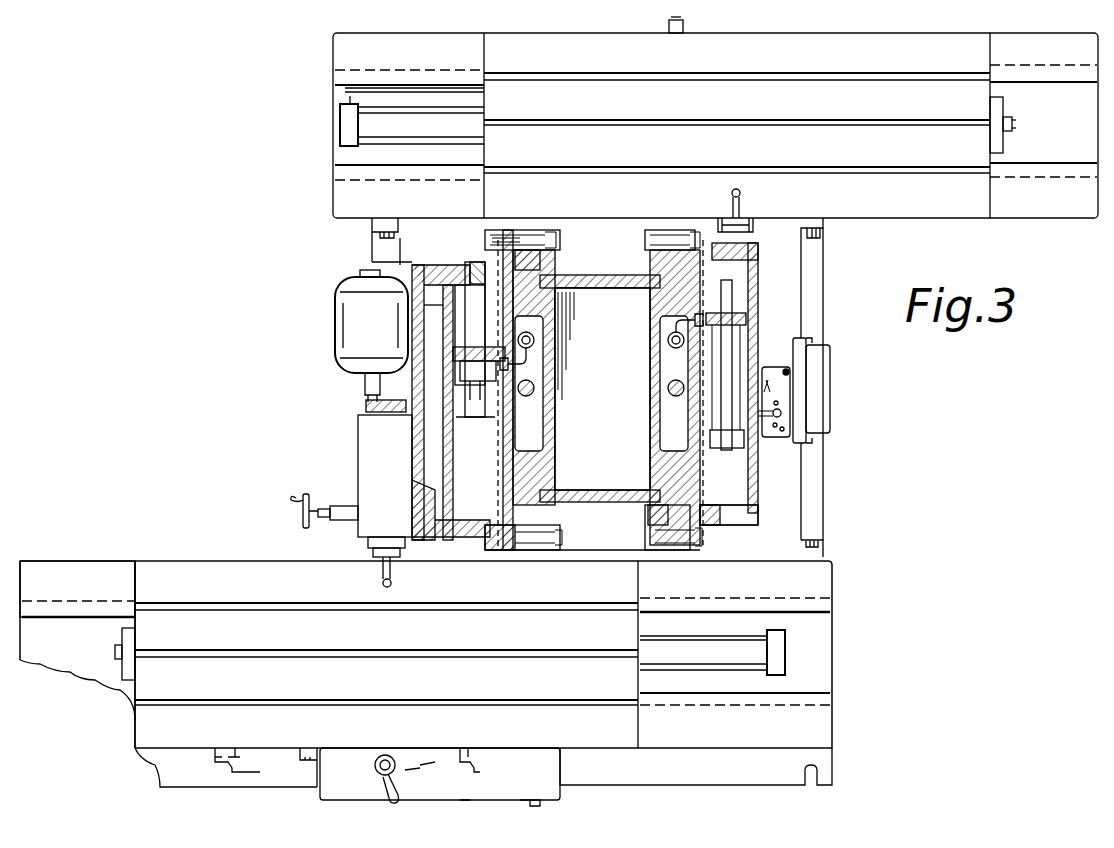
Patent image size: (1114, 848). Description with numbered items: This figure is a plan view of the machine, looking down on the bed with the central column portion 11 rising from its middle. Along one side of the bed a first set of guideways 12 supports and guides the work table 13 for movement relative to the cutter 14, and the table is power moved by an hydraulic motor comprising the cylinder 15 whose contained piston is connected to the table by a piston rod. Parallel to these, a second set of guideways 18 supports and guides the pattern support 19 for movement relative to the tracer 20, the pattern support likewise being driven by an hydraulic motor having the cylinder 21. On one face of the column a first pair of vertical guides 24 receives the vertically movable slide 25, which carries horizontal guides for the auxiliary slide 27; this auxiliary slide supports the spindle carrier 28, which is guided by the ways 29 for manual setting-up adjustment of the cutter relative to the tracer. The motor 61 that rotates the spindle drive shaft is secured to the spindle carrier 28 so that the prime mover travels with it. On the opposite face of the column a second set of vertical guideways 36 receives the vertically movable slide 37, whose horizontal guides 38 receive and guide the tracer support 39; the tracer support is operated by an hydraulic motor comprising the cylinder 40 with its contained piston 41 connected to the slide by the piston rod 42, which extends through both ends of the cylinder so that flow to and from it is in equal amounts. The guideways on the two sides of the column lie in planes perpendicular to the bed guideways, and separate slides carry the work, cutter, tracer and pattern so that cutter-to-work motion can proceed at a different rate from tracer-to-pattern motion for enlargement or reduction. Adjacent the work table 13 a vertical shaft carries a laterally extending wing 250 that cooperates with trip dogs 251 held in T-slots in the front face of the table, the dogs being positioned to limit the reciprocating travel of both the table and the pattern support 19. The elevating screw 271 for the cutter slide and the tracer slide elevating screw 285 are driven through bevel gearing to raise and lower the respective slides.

The column portion 11 is at (612, 500).
The first set of guideways 12 is at (82, 618).
The work table 13 is at (241, 573).
The cutter 14 is at (380, 578).
The cylinder 15 is at (750, 654).
The second set of guideways 18 is at (1020, 86).
The pattern support 19 is at (893, 212).
The tracer 20 is at (740, 193).
The cylinder 21 is at (373, 128).
The first pair of vertical guides 24 is at (525, 265).
The vertically movable slide 25 is at (530, 560).
The auxiliary slide 27 is at (460, 265).
The spindle carrier 28 is at (414, 268).
The ways 29 is at (435, 292).
The second set of vertical guideways 36 is at (663, 285).
The vertically movable slide 37 is at (690, 548).
The horizontal guides 38 is at (720, 521).
The tracer support 39 is at (760, 277).
The cylinder 40 is at (762, 352).
The piston 41 is at (735, 384).
The piston rod 42 is at (748, 455).
The motor 61 is at (352, 318).
The laterally extending wing 250 is at (388, 756).
The trip dogs 251 is at (232, 775).
The elevating screw 271 is at (534, 386).
The tracer slide elevating screw 285 is at (660, 376).